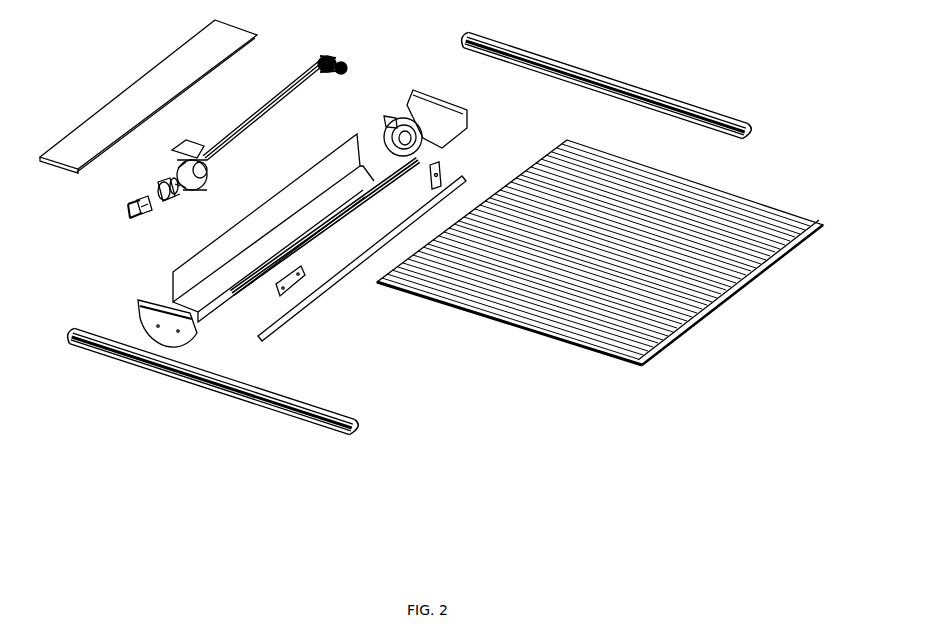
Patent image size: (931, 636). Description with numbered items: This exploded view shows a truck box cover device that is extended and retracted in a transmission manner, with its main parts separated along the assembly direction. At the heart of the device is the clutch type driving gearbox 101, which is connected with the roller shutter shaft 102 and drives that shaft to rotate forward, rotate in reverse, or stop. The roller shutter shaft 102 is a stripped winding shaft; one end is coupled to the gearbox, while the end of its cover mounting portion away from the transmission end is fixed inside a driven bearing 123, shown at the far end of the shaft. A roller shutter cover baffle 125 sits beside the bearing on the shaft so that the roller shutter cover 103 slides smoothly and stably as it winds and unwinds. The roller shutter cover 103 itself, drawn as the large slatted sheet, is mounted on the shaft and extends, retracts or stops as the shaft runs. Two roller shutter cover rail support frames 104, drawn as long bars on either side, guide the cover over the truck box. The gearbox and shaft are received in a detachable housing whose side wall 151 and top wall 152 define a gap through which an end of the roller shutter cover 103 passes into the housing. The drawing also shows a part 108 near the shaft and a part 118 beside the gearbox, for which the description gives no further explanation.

The clutch type driving gearbox 101 is at (185, 192).
The roller shutter shaft 102 is at (294, 82).
The roller shutter cover 103 is at (720, 187).
The roller shutter cover rail support frames 104 is at (603, 73).
The housing 108 is at (293, 203).
The mounting bracket 118 is at (128, 201).
The driven bearing 123 is at (337, 57).
The roller shutter cover baffle 125 is at (346, 68).
The side wall 151 is at (218, 251).
The top wall 152 is at (130, 102).